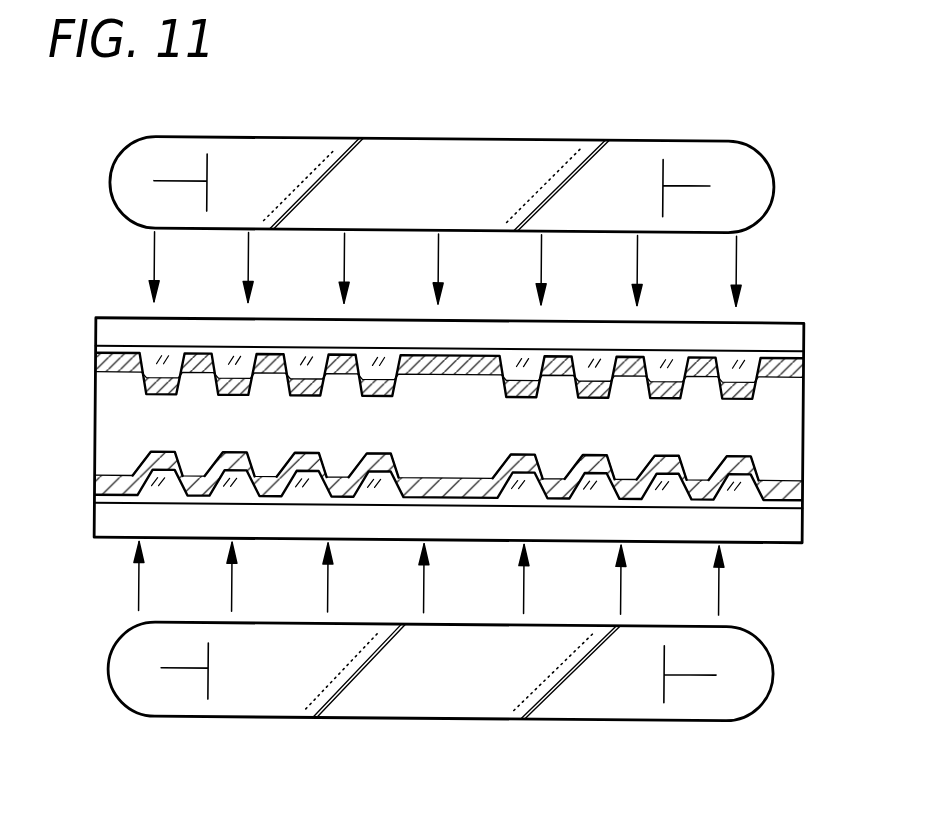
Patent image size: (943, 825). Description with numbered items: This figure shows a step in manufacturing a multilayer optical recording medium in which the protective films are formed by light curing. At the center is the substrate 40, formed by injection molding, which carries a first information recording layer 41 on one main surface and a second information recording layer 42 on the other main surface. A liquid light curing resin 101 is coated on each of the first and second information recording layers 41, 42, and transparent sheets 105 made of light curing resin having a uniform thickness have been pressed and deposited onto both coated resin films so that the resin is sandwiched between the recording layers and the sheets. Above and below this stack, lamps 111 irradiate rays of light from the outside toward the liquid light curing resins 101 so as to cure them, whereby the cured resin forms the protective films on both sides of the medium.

The lamp 111 is at (626, 164).
The substrate 40 is at (772, 422).
The transparent sheet 105 is at (783, 340).
The liquid light curing resin 101 is at (449, 426).
The second information recording layer 42 is at (155, 384).
The first information recording layer 41 is at (158, 467).